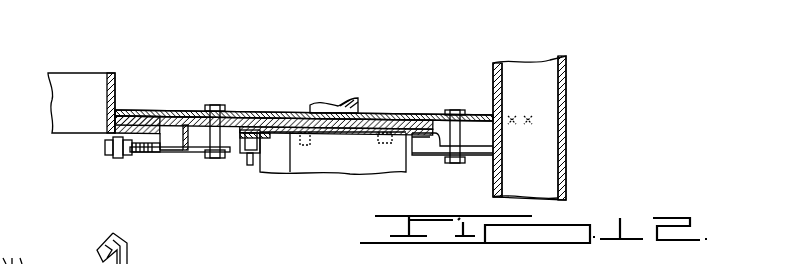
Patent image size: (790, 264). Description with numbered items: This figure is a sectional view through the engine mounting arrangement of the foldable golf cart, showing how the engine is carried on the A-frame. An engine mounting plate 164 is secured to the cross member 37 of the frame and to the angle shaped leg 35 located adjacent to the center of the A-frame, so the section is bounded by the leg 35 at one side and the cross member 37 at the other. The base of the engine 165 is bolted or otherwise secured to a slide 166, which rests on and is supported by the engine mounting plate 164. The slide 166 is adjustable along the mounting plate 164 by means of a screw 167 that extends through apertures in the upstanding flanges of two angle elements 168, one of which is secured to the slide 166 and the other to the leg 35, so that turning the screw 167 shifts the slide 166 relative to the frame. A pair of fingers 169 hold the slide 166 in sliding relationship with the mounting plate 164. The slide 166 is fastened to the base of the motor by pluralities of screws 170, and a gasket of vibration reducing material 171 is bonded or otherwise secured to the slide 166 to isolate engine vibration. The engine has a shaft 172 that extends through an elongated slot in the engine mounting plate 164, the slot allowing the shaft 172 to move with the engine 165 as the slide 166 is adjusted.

The angle shaped leg 35 is at (117, 82).
The cross member 37 is at (567, 98).
The engine mounting plate 164 is at (438, 113).
The engine 165 is at (362, 173).
The slide 166 is at (498, 148).
The screw 167 is at (167, 148).
The angle element 168 is at (113, 160).
The finger 169 is at (198, 127).
The screw 170 is at (392, 140).
The gasket of vibration reducing material 171 is at (268, 115).
The engine shaft 172 is at (343, 103).